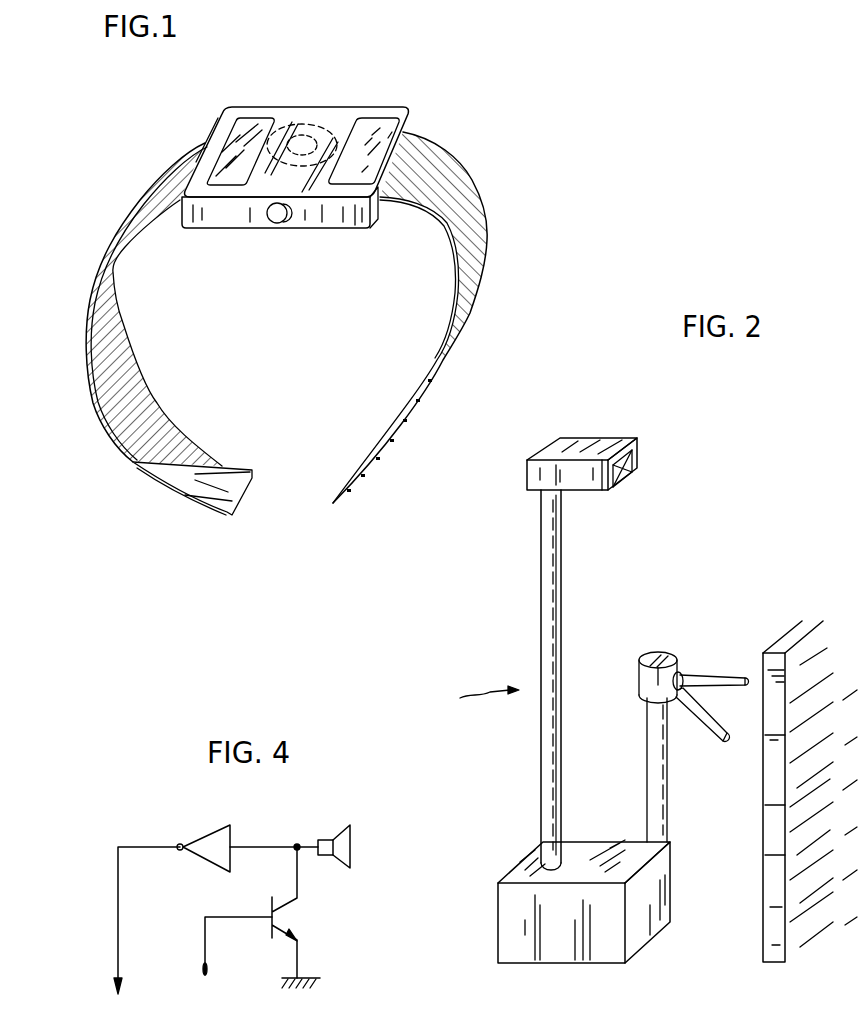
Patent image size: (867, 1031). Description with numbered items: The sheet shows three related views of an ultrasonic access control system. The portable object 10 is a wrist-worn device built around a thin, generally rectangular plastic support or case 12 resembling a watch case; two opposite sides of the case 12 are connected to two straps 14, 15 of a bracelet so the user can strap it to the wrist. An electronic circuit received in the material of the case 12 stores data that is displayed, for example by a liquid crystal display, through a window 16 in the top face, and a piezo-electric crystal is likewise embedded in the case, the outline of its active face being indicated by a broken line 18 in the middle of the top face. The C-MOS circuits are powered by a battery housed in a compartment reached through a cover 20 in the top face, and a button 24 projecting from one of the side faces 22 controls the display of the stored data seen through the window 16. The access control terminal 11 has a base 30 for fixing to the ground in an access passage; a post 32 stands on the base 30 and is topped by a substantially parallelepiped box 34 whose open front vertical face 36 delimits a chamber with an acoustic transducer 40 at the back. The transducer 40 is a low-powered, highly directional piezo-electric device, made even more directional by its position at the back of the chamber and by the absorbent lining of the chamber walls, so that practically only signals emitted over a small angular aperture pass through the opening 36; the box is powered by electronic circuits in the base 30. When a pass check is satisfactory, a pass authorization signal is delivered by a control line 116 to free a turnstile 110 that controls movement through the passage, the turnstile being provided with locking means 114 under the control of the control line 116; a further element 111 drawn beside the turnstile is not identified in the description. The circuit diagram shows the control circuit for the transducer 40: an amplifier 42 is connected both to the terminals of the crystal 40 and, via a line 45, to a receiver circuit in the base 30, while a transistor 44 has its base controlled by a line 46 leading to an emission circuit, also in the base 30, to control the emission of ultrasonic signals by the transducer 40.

In FIG. 1, the portable object 10 is at (279, 92).
In FIG. 1, the support 12 is at (345, 117).
In FIG. 1, the strap 14 is at (91, 293).
In FIG. 1, the strap 15 is at (476, 237).
In FIG. 1, the window 16 is at (251, 128).
In FIG. 1, the broken line 18 is at (300, 128).
In FIG. 1, the cover 20 is at (373, 128).
In FIG. 1, the side face 22 is at (231, 217).
In FIG. 1, the button 24 is at (277, 222).
In FIG. 2, the terminal 11 is at (476, 693).
In FIG. 2, the base 30 is at (555, 945).
In FIG. 2, the post 32 is at (548, 620).
In FIG. 2, the box 34 is at (586, 445).
In FIG. 2, the open front vertical face 36 is at (622, 465).
In FIG. 2, the turnstile 110 is at (718, 672).
In FIG. 2, the wall 111 is at (733, 787).
In FIG. 2, the locking means 114 is at (650, 657).
In FIG. 2, the control line 116 is at (657, 777).
In FIG. 4, the acoustic transducer 40 is at (347, 840).
In FIG. 4, the amplifier 42 is at (203, 840).
In FIG. 4, the transistor 44 is at (288, 917).
In FIG. 4, the line 45 is at (117, 905).
In FIG. 4, the line 46 is at (205, 952).